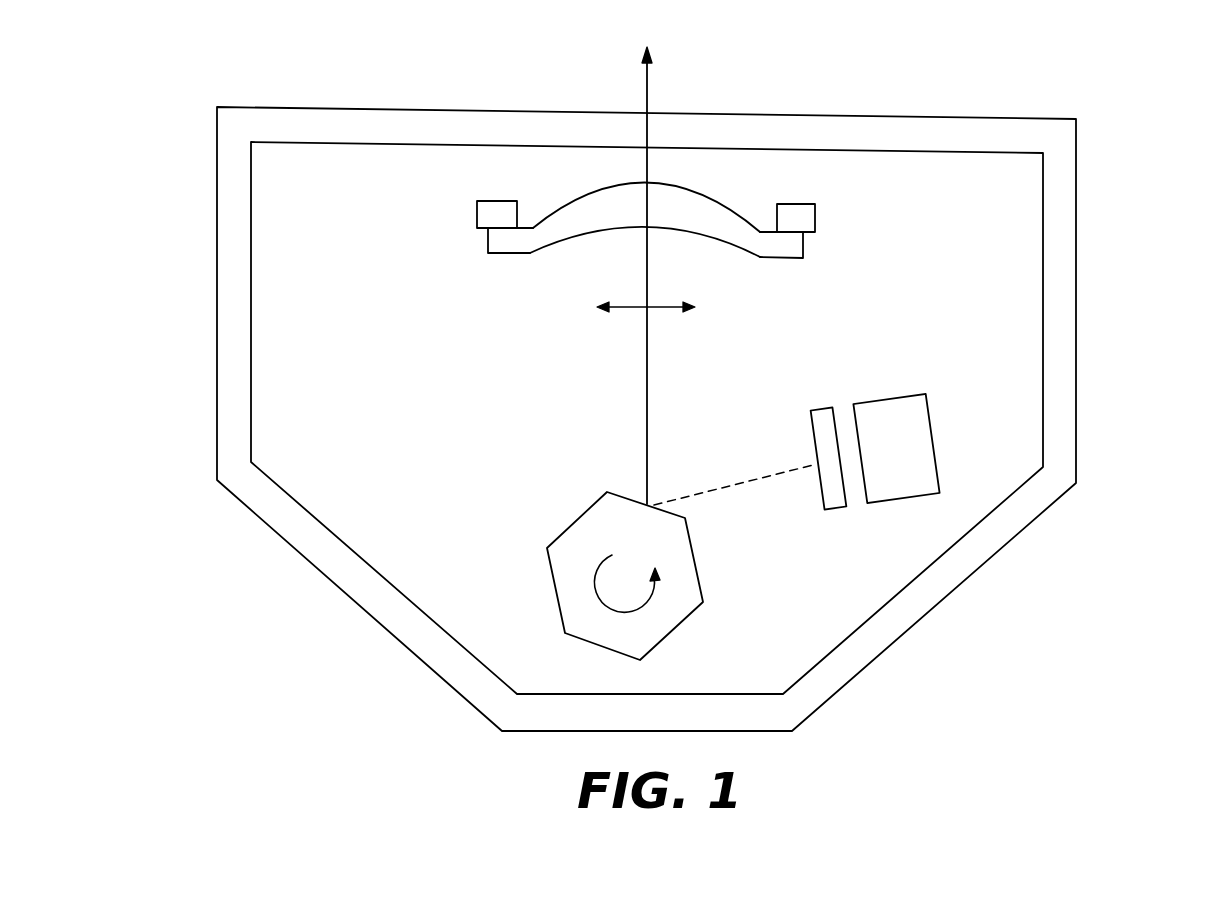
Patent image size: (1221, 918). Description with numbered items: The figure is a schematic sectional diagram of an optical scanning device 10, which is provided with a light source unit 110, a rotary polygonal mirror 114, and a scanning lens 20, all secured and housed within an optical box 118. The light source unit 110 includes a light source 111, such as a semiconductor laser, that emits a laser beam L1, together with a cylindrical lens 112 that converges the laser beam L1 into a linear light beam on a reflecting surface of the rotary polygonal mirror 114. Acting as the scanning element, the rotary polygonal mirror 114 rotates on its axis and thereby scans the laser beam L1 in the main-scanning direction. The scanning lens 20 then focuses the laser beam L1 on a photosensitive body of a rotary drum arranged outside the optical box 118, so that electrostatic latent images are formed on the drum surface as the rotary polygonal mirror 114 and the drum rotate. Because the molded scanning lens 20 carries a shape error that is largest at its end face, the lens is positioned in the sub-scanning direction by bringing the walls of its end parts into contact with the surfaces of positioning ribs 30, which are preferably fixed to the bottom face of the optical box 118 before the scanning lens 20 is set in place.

The optical scanning device 10 is at (870, 692).
The optical box 118 is at (1058, 252).
The laser beam L1 is at (647, 95).
The scanning lens 20 is at (517, 240).
The positioning ribs 30 is at (485, 213).
The rotary polygonal mirror 114 is at (568, 615).
The light source unit 110 is at (890, 453).
The light source 111 is at (905, 412).
The cylindrical lens 112 is at (822, 422).